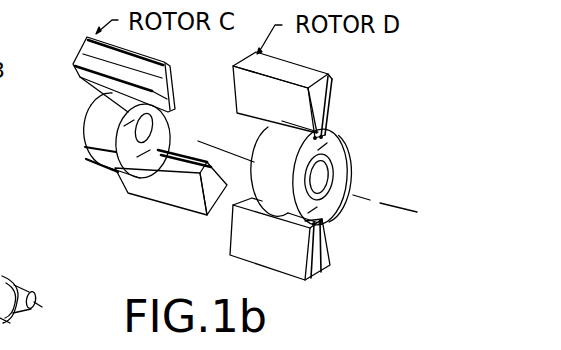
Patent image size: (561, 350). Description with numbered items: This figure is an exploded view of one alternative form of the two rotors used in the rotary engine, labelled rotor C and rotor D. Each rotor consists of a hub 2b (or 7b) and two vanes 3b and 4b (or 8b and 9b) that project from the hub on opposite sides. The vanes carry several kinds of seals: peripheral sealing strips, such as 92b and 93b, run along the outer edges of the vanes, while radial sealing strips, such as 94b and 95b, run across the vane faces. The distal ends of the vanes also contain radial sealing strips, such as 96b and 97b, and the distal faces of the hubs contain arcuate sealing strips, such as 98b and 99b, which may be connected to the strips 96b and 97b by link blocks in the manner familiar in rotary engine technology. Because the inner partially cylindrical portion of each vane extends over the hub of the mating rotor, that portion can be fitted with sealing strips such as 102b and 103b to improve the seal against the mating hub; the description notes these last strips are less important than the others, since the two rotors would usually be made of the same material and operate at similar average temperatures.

The hub 2b is at (105, 164).
The vane 3b is at (146, 210).
The vane 4b is at (150, 71).
The hub 7b is at (256, 243).
The vane 8b is at (351, 249).
The vane 9b is at (308, 93).
The peripheral sealing strip 92b is at (87, 80).
The peripheral sealing strip 93b is at (89, 108).
The radial sealing strip 94b is at (115, 160).
The radial sealing strip 95b is at (73, 180).
The radial sealing strip 96b is at (328, 100).
The radial sealing strip 97b is at (318, 124).
The arcuate sealing strip 98b is at (345, 145).
The arcuate sealing strip 99b is at (317, 180).
The sealing strip 102b is at (142, 132).
The sealing strip 103b is at (188, 160).